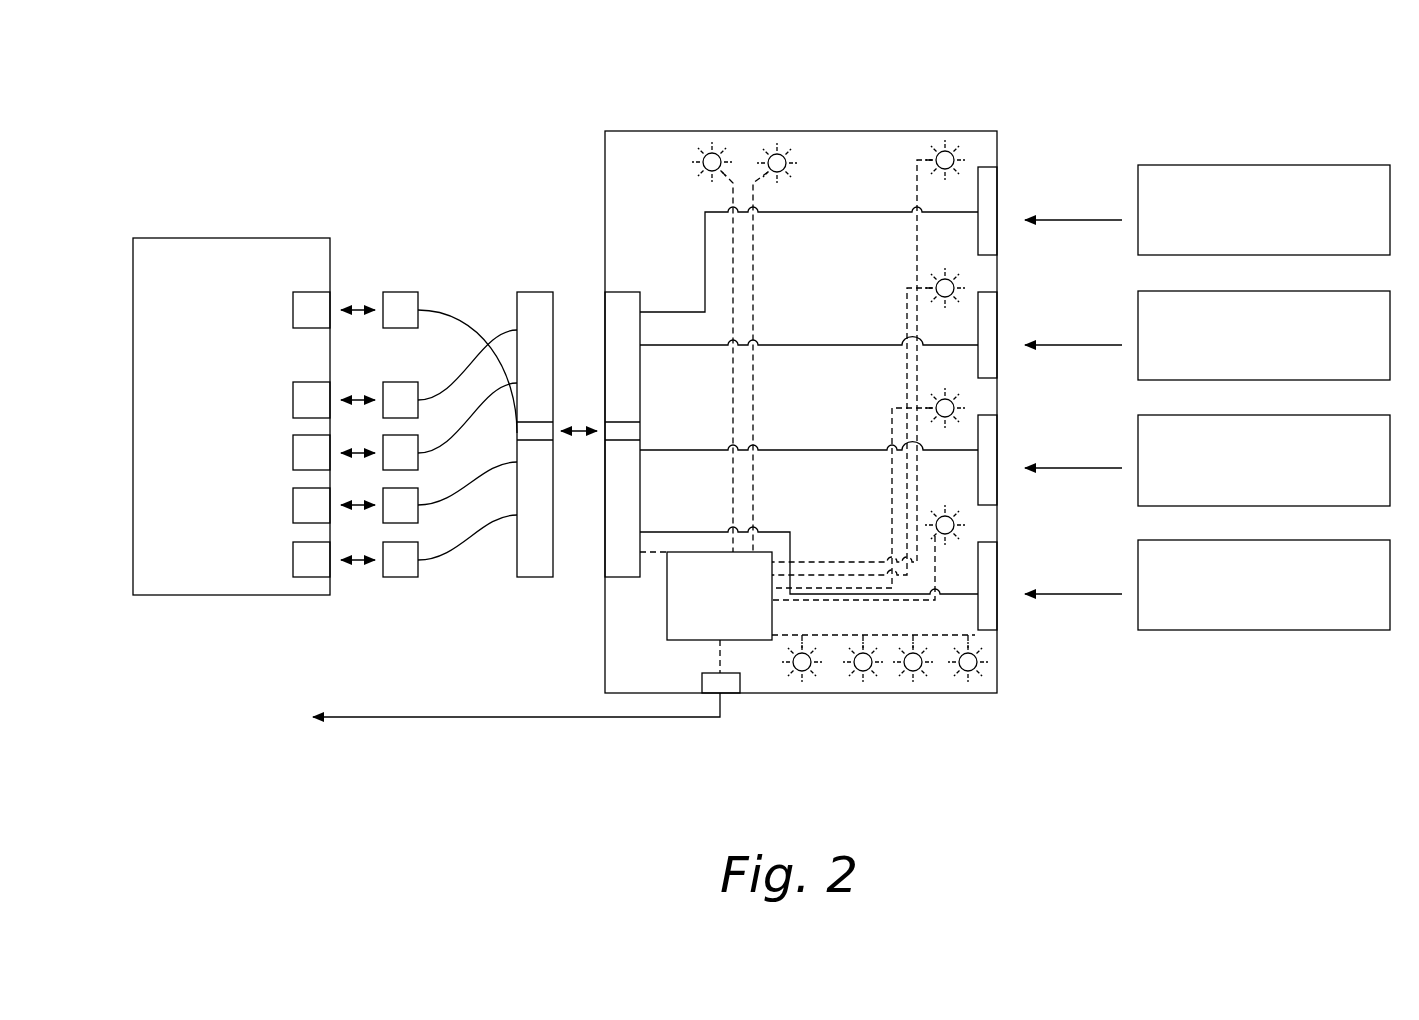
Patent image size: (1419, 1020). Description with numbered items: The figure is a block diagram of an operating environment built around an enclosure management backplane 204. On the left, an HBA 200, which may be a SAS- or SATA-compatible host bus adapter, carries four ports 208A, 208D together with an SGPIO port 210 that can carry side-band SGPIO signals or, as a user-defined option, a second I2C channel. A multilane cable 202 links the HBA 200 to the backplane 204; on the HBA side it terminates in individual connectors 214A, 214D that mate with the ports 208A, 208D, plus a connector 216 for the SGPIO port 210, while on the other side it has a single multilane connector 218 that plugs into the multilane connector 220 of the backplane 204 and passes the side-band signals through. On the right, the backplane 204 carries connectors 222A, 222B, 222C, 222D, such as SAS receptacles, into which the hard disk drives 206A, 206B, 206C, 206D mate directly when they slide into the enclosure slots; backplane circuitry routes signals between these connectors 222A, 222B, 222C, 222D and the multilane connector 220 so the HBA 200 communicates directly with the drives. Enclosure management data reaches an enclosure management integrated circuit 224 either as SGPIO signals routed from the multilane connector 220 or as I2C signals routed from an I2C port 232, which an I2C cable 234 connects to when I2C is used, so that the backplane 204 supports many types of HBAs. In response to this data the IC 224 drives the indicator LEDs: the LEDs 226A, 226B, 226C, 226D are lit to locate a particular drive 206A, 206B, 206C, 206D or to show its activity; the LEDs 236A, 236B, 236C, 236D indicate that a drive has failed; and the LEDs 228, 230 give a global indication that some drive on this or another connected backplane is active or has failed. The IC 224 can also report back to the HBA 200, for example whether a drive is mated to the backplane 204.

The host bus adapter (HBA) 200 is at (260, 248).
The multilane cable 202 is at (490, 225).
The enclosure management backplane 204 is at (842, 143).
The hard disk drive 206A is at (1248, 168).
The hard disk drive 206B is at (1158, 309).
The hard disk drive 206C is at (1158, 433).
The hard disk drive 206D is at (1246, 632).
The HBA port 208A is at (308, 390).
The HBA port 208D is at (312, 572).
The SGPIO port 210 is at (318, 308).
The individual connector 214A is at (403, 393).
The individual connector 214D is at (400, 572).
The SGPIO connector 216 is at (405, 300).
The multilane connector 218 is at (532, 578).
The multilane connector 220 is at (630, 296).
The drive connector 222A is at (990, 195).
The drive connector 222B is at (990, 330).
The drive connector 222C is at (990, 456).
The drive connector 222D is at (990, 583).
The enclosure management integrated circuit 224 is at (661, 628).
The LED 226A is at (955, 150).
The LED 226B is at (962, 282).
The LED 226C is at (962, 402).
The LED 226D is at (962, 527).
The LED 228 is at (714, 150).
The LED 230 is at (780, 152).
The I2C port 232 is at (727, 700).
The I2C cable 234 is at (562, 722).
The LED 236A is at (796, 683).
The LED 236B is at (858, 690).
The LED 236C is at (913, 683).
The LED 236D is at (968, 690).